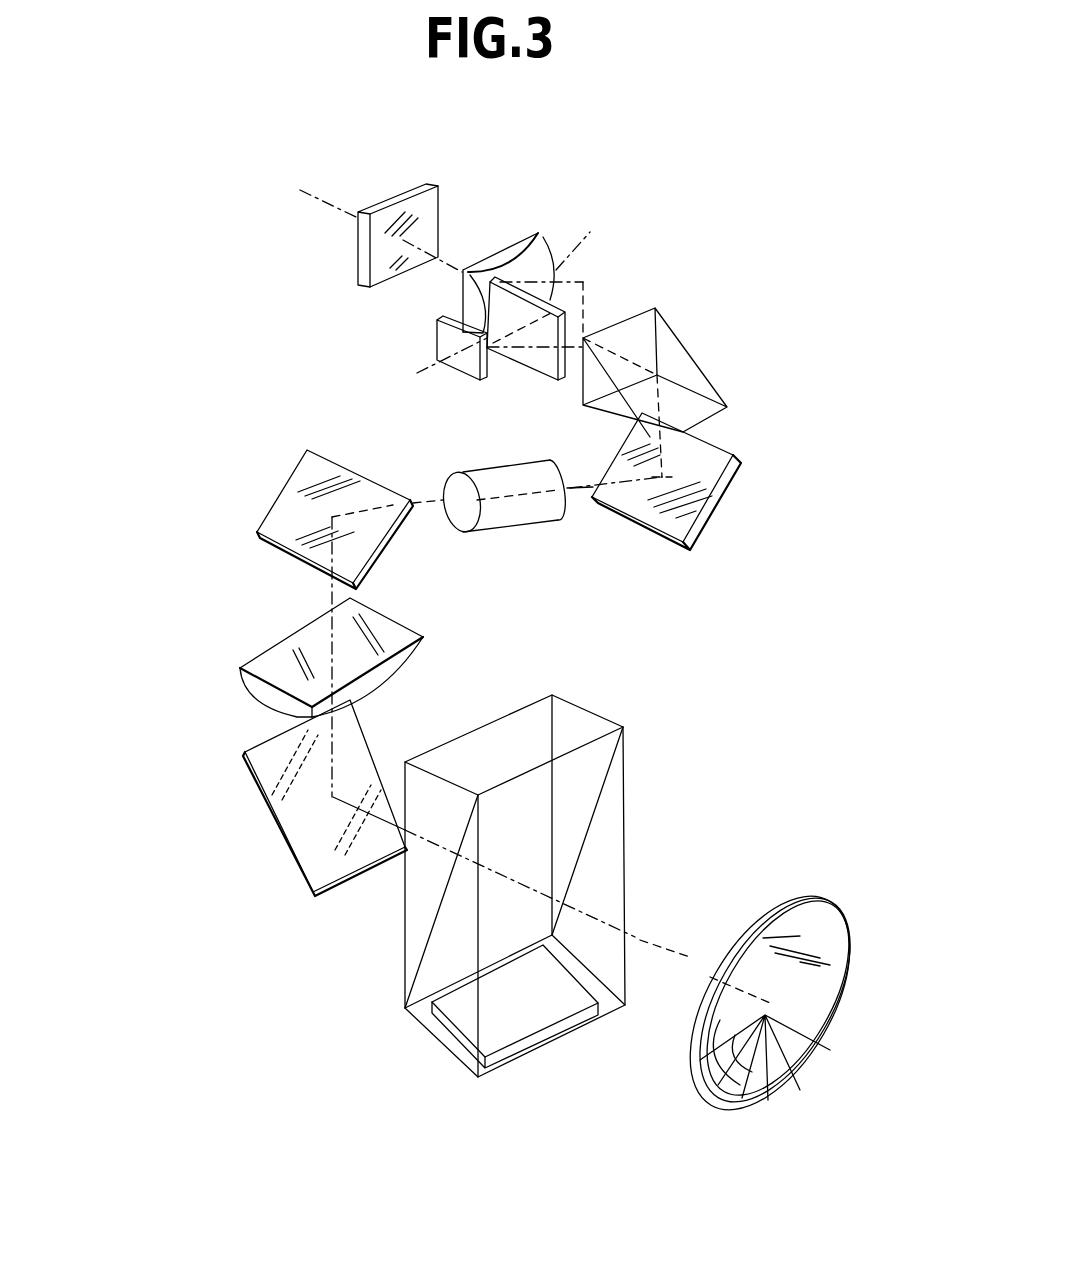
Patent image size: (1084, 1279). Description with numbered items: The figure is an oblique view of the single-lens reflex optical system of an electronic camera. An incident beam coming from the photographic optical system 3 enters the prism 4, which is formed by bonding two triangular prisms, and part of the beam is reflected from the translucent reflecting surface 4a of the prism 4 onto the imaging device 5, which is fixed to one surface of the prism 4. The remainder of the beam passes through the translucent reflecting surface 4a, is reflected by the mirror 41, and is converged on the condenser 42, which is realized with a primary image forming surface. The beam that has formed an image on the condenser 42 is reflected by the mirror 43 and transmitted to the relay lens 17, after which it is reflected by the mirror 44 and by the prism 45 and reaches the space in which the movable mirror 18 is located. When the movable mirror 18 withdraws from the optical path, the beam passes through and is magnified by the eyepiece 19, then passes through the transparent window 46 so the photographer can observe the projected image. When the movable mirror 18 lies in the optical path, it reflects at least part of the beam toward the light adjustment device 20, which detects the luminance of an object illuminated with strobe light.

The photographic optical system 3 is at (805, 927).
The prism 4 is at (563, 886).
The translucent reflecting surface 4a is at (580, 792).
The imaging device 5 is at (510, 1020).
The relay lens 17 is at (518, 513).
The movable mirror 18 is at (550, 300).
The eyepiece 19 is at (517, 247).
The light adjustment device 20 is at (460, 363).
The mirror 41 is at (325, 855).
The condenser 42 is at (262, 690).
The mirror 43 is at (292, 508).
The mirror 44 is at (707, 467).
The prism 45 is at (693, 405).
The transparent window 46 is at (428, 218).